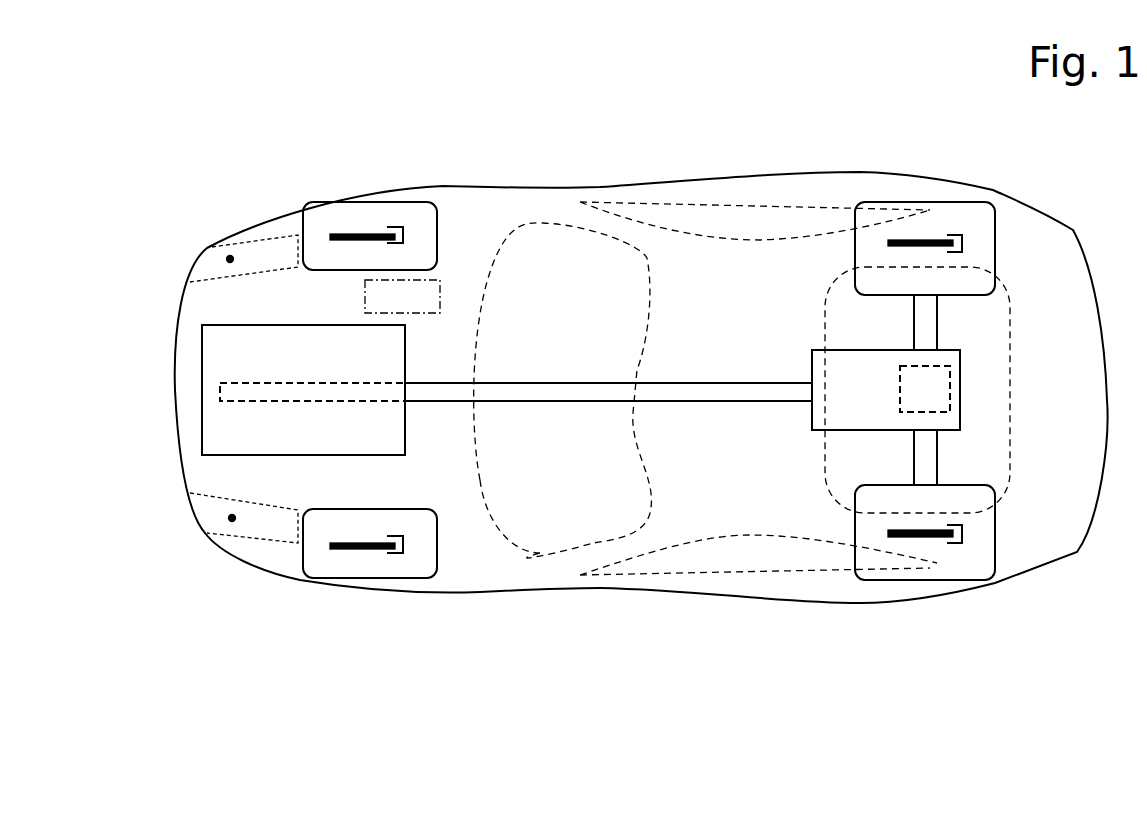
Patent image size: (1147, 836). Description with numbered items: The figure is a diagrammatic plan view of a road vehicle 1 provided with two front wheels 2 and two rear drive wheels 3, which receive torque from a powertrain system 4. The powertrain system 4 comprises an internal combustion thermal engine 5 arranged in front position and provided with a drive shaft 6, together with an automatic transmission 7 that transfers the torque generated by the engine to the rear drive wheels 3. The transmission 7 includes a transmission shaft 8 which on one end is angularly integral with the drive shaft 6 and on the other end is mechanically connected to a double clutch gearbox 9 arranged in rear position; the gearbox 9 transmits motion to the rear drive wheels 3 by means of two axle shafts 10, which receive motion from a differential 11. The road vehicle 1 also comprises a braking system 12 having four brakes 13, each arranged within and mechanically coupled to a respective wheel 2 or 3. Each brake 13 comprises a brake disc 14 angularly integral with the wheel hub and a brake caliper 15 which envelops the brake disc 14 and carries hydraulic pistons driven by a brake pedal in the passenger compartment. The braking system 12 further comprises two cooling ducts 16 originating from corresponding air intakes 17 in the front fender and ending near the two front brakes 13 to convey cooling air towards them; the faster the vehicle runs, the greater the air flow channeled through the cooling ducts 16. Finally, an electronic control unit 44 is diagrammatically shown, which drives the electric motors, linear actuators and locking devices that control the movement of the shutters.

The road vehicle 1 is at (964, 711).
The front wheel 2 is at (320, 215).
The rear drive wheel 3 is at (985, 213).
The powertrain system 4 is at (239, 206).
The internal combustion thermal engine 5 is at (208, 348).
The drive shaft 6 is at (290, 395).
The automatic transmission 7 is at (661, 168).
The transmission shaft 8 is at (680, 397).
The double clutch gearbox 9 is at (886, 390).
The axle shaft 10 is at (920, 313).
The differential 11 is at (925, 389).
The braking system 12 is at (259, 689).
The brake 13 is at (646, 384).
The brake disc 14 is at (364, 233).
The brake caliper 15 is at (400, 228).
The cooling duct 16 is at (228, 257).
The air intake 17 is at (187, 264).
The electronic control unit 44 is at (402, 296).